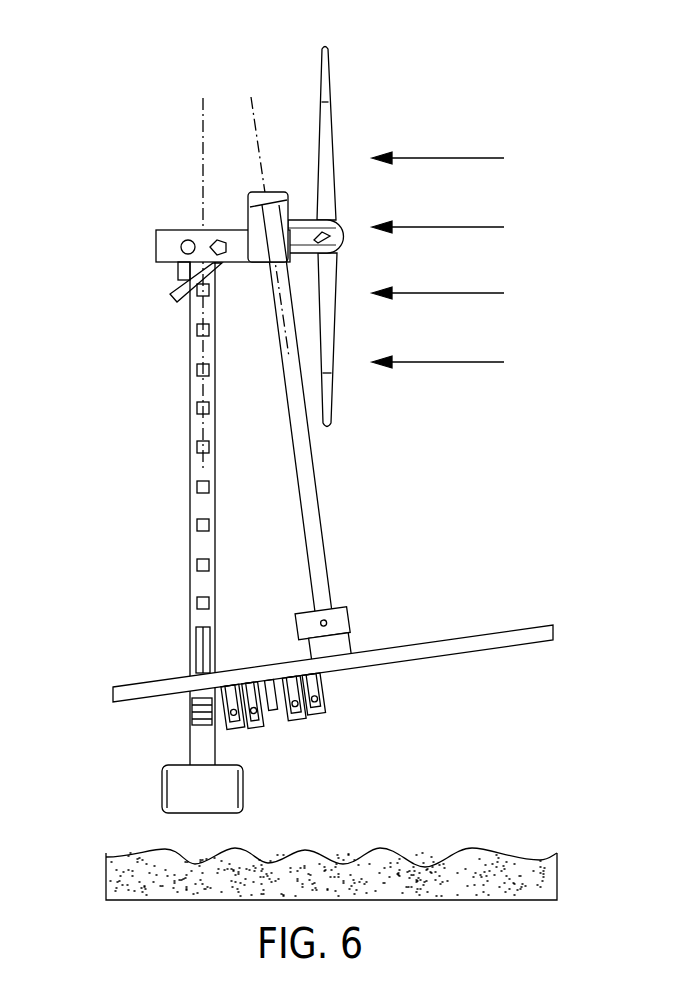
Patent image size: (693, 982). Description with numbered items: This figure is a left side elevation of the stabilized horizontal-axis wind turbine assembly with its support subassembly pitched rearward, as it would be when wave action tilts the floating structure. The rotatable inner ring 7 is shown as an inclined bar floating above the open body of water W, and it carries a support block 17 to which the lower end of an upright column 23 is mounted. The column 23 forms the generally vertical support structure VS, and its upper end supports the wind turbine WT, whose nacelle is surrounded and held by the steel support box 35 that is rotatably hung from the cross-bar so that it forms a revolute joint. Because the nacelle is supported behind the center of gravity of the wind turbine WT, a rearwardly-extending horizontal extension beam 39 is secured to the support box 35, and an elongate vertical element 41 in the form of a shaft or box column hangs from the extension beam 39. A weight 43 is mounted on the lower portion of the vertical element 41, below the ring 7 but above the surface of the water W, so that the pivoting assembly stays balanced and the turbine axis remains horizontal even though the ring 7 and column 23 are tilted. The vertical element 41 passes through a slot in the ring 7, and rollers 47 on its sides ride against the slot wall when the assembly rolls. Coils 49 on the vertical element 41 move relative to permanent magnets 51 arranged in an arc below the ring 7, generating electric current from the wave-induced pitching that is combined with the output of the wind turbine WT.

The wind turbine WT is at (275, 124).
The generally vertical support structure VS is at (338, 474).
The open body of water W is at (557, 858).
The rotatable inner ring 7 is at (478, 632).
The support block 17 is at (347, 615).
The upright column 23 is at (322, 578).
The support box 35 is at (280, 193).
The horizontal extension beam 39 is at (172, 243).
The elongate vertical element 41 is at (195, 394).
The weight 43 is at (162, 790).
The rollers 47 is at (200, 643).
The coils 49 is at (200, 712).
The permanent magnets 51 is at (253, 730).